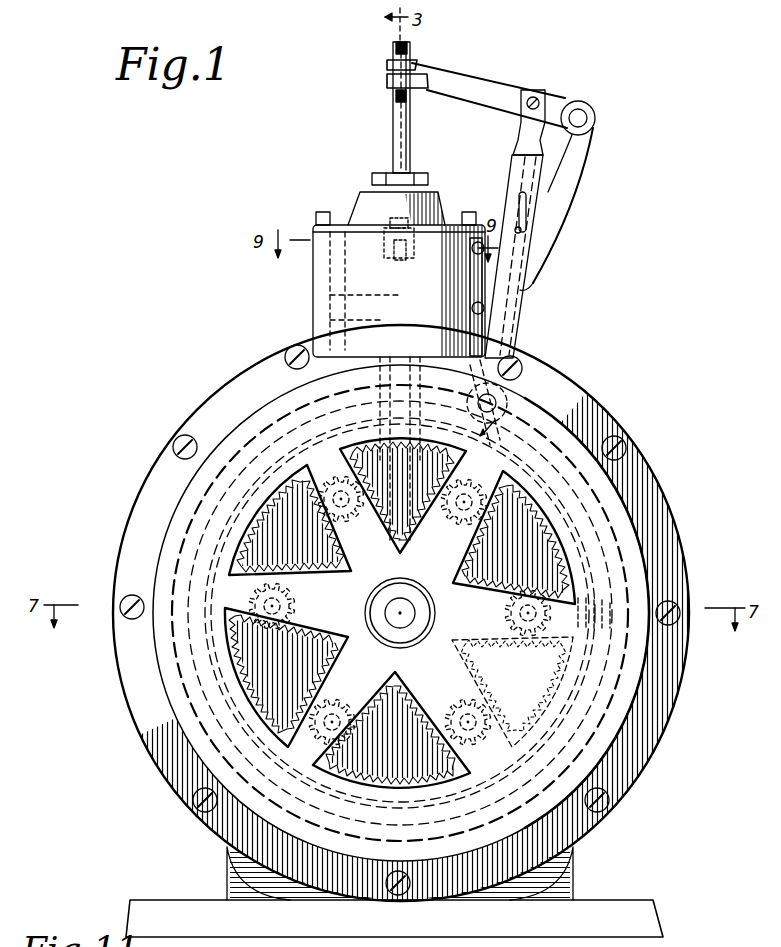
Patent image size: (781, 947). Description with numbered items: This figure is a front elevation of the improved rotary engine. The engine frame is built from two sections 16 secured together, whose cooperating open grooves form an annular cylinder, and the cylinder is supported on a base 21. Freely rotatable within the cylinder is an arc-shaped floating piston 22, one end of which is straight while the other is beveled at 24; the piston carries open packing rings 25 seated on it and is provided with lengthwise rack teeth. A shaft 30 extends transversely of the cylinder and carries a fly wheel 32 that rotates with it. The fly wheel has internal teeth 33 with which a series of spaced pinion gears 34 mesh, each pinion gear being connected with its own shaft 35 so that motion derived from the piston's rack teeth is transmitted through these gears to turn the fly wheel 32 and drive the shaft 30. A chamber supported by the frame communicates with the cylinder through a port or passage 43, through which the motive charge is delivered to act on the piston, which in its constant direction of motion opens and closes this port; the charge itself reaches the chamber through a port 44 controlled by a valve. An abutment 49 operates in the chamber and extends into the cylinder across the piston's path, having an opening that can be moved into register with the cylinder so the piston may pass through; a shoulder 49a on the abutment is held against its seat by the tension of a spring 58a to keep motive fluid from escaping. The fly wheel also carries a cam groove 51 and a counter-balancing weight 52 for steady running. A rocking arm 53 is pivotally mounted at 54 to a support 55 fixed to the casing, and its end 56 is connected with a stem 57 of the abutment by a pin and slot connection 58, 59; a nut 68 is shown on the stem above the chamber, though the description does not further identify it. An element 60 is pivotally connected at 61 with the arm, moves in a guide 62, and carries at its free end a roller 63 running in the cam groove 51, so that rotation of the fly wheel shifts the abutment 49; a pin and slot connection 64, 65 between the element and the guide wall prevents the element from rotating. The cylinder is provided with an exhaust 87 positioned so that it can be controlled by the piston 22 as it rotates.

The engine frame sections 16 is at (130, 655).
The base 21 is at (228, 896).
The floating piston 22 is at (600, 380).
The beveled end of piston 24 is at (240, 480).
The packing rings 25 is at (545, 433).
The shaft 30 is at (403, 613).
The fly wheel 32 is at (178, 722).
The internal teeth 33 is at (556, 530).
The pinion gears 34 is at (472, 540).
The shaft 35 is at (352, 530).
The port or passage 43 is at (375, 350).
The port 44 is at (420, 240).
The abutment 49 is at (398, 297).
The shoulder 49a is at (380, 222).
The cam groove 51 is at (598, 432).
The counter-balancing weight 52 is at (518, 676).
The rocking arm 53 is at (484, 87).
The pivot 54 is at (579, 117).
The support 55 is at (562, 172).
The end of arm 56 is at (418, 70).
The stem 57 is at (397, 122).
The pin 58 is at (388, 68).
The spring 58a is at (395, 94).
The slot 59 is at (395, 58).
The element 60 is at (518, 132).
The pivotal connection 61 is at (535, 98).
The guide 62 is at (518, 302).
The roller 63 is at (548, 392).
The pin 64 is at (521, 232).
The slot 65 is at (527, 218).
The nut 68 is at (372, 179).
The exhaust 87 is at (590, 632).